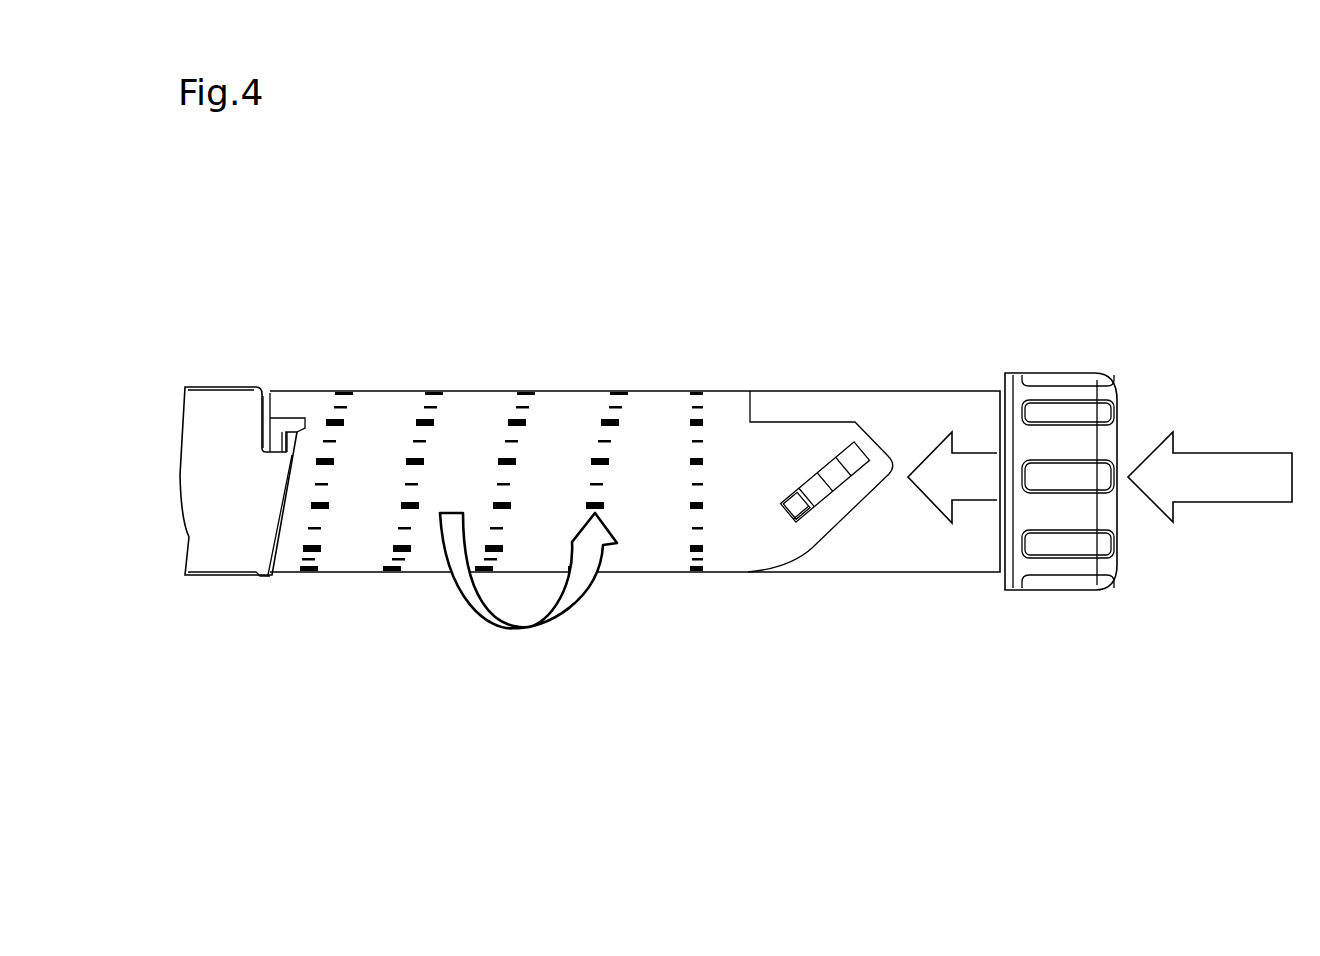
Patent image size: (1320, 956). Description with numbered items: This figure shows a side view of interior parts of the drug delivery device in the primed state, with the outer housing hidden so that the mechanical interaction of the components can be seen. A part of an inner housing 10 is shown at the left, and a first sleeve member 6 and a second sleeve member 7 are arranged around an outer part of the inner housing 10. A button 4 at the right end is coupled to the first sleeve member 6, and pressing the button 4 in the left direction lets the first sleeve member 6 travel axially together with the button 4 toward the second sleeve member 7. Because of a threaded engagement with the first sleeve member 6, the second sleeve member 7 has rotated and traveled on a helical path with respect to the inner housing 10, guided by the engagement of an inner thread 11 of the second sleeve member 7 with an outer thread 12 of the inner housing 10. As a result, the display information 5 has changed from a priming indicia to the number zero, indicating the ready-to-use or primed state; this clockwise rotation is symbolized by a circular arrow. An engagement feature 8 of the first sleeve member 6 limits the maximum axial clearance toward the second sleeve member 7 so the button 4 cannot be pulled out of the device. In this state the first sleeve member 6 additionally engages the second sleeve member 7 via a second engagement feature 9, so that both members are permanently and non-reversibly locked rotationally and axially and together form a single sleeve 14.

The button 4 is at (1105, 368).
The display information 5 is at (678, 405).
The first sleeve member 6 is at (942, 413).
The second sleeve member 7 is at (623, 437).
The engagement feature 8 is at (795, 508).
The second engagement feature 9 is at (850, 450).
The inner housing 10 is at (215, 497).
The inner thread 11 is at (280, 438).
The outer thread 12 is at (277, 438).
The sleeve 14 is at (750, 672).